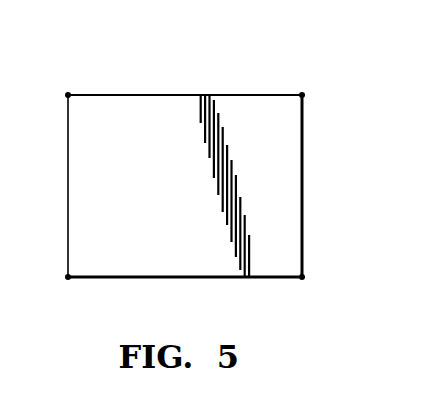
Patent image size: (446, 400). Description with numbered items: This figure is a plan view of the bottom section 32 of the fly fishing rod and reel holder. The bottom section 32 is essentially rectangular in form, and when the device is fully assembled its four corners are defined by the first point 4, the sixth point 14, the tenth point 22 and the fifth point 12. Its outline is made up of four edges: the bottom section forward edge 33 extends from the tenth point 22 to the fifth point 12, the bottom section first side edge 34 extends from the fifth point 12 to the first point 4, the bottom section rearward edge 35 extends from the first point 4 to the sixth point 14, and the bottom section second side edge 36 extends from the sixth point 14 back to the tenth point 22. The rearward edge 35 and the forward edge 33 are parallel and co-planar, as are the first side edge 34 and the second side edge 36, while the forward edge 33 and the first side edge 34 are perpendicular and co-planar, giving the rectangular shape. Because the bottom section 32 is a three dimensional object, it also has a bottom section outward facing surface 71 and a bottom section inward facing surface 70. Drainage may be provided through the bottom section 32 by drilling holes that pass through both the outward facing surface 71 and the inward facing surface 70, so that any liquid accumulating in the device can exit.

The first point 4 is at (303, 278).
The fifth point 12 is at (303, 93).
The sixth point 14 is at (67, 279).
The tenth point 22 is at (67, 93).
The bottom section 32 is at (152, 195).
The bottom section forward edge 33 is at (180, 94).
The bottom section first side edge 34 is at (303, 167).
The bottom section rearward edge 35 is at (180, 279).
The bottom section second side edge 36 is at (68, 188).
The bottom section inward facing surface 70 is at (88, 148).
The bottom section outward facing surface 71 is at (132, 74).